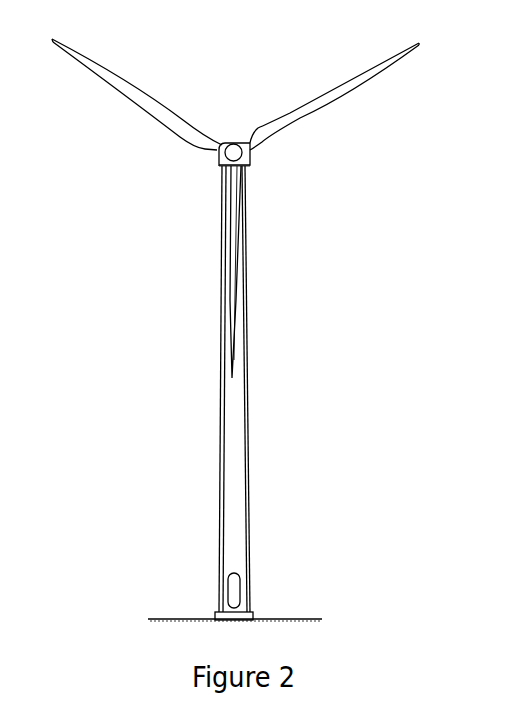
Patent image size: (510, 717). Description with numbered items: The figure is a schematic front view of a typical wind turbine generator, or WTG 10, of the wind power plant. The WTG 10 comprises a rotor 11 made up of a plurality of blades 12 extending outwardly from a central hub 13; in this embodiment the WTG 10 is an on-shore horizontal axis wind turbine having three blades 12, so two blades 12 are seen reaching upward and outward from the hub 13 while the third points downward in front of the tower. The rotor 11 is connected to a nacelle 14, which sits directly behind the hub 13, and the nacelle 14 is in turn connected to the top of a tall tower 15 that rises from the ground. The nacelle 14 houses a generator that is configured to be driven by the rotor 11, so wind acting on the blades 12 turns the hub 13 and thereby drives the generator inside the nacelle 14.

The wind turbine generator (WTG) 10 is at (176, 327).
The rotor 11 is at (176, 192).
The blades 12 is at (175, 110).
The hub 13 is at (232, 140).
The nacelle 14 is at (251, 163).
The tower 15 is at (248, 385).